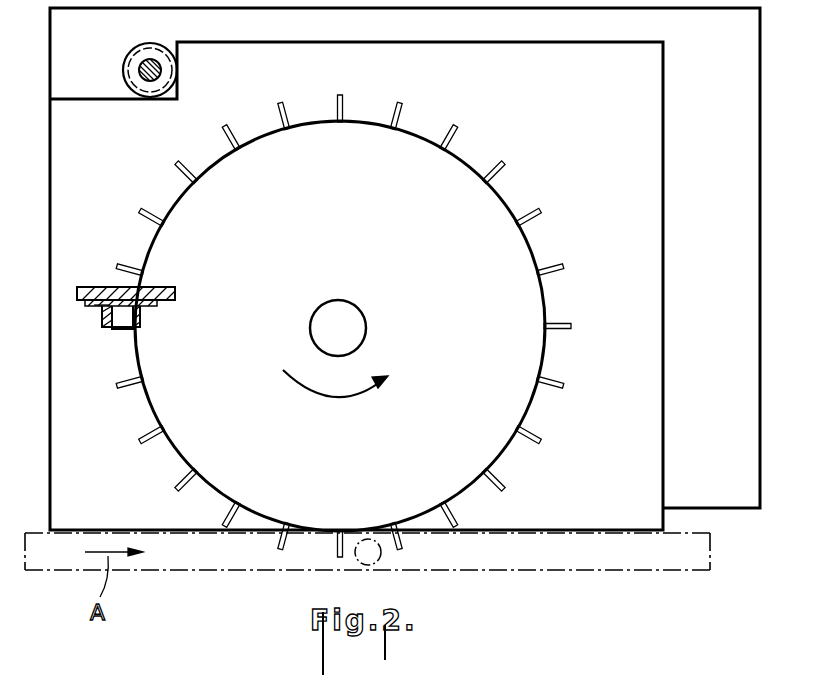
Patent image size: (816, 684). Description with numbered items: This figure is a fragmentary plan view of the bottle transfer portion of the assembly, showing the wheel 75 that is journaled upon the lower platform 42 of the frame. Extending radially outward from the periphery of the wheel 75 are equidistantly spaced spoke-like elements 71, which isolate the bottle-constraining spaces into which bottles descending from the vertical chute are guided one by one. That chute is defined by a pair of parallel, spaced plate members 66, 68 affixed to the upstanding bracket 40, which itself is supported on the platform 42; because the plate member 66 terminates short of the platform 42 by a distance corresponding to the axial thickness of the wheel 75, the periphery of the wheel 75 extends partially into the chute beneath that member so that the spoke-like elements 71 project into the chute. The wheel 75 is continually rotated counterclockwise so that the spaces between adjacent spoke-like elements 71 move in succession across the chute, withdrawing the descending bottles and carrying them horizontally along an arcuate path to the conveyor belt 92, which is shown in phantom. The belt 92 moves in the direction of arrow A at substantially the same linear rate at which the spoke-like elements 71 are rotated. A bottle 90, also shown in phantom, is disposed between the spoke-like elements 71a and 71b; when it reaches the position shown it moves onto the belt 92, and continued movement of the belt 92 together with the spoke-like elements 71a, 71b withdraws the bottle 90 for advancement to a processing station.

The lower platform 42 is at (725, 302).
The wheel 75 is at (352, 250).
The spoke-like elements 71 is at (283, 100).
The spoke-like element 71a is at (337, 553).
The spoke-like element 71b is at (400, 549).
The bracket 40 is at (176, 292).
The plate member 66 is at (145, 306).
The plate member 68 is at (98, 307).
The conveyor belt 92 is at (672, 570).
The bottle 90 is at (376, 560).